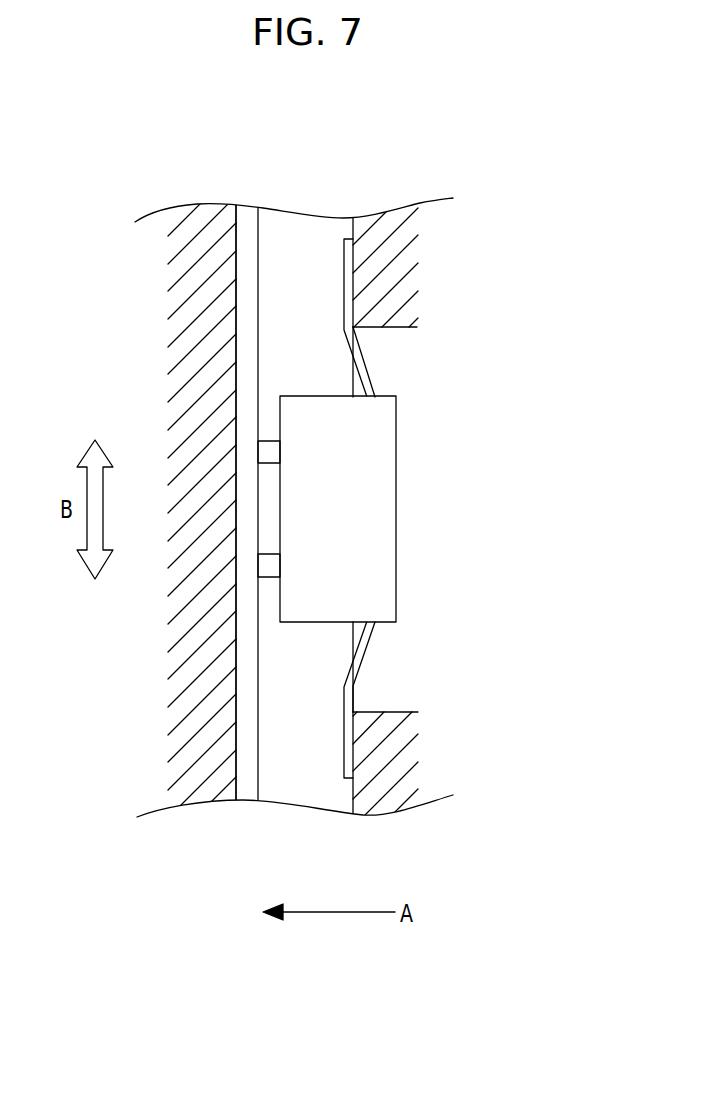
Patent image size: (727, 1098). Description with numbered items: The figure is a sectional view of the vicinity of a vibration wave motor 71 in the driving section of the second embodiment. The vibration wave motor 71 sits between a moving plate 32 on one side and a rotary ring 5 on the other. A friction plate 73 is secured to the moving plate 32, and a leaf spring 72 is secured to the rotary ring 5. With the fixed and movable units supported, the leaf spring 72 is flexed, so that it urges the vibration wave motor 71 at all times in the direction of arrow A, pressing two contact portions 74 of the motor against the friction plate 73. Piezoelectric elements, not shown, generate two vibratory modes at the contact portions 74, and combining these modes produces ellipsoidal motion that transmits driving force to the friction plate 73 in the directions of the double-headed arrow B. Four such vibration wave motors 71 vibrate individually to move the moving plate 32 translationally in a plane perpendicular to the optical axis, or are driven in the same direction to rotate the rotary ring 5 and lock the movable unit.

The rotary ring 5 is at (405, 287).
The moving plate 32 is at (188, 725).
The vibration wave motor 71 is at (355, 504).
The leaf spring 72 is at (362, 370).
The friction plate 73 is at (250, 277).
The contact portions 74 is at (268, 451).